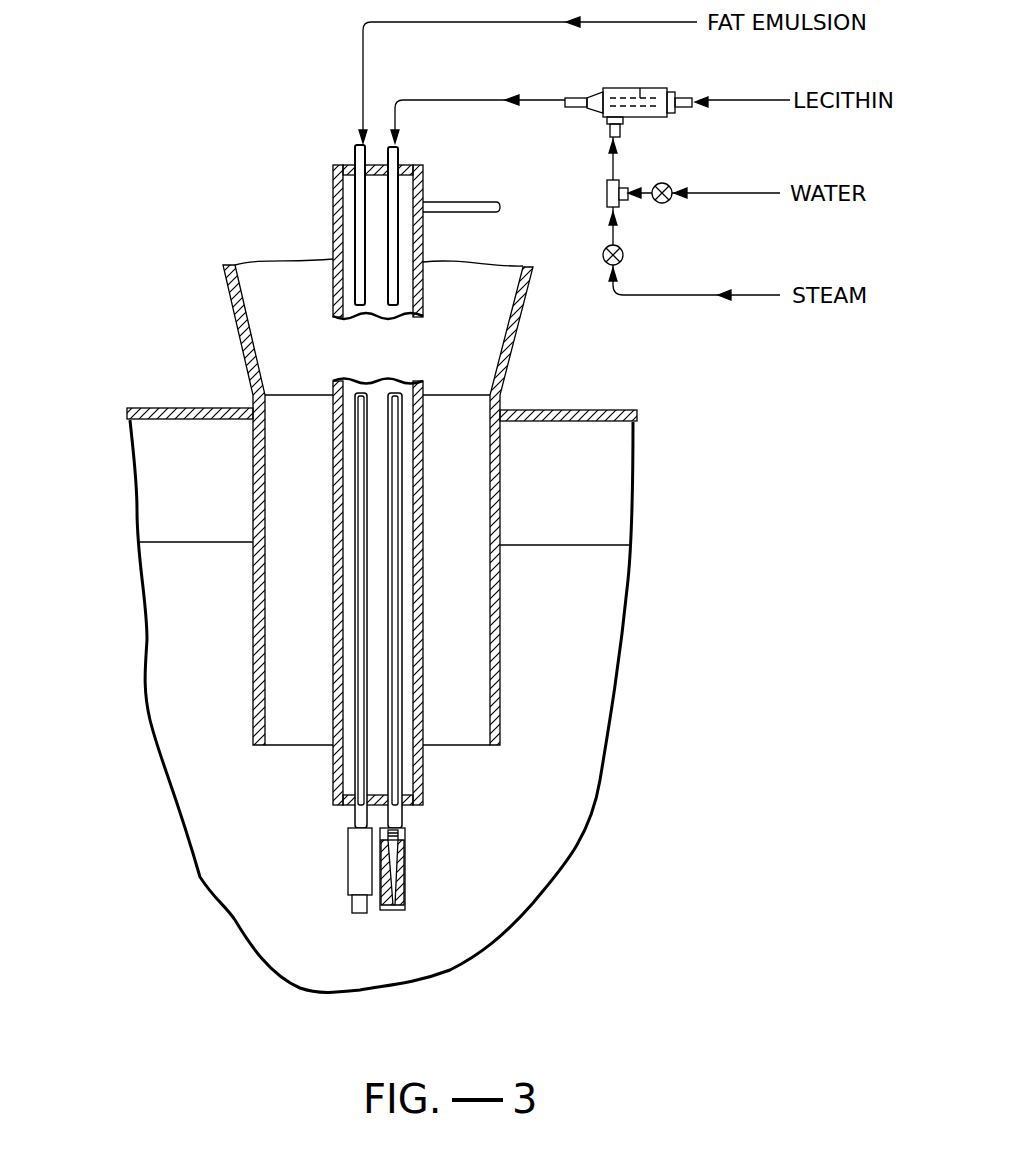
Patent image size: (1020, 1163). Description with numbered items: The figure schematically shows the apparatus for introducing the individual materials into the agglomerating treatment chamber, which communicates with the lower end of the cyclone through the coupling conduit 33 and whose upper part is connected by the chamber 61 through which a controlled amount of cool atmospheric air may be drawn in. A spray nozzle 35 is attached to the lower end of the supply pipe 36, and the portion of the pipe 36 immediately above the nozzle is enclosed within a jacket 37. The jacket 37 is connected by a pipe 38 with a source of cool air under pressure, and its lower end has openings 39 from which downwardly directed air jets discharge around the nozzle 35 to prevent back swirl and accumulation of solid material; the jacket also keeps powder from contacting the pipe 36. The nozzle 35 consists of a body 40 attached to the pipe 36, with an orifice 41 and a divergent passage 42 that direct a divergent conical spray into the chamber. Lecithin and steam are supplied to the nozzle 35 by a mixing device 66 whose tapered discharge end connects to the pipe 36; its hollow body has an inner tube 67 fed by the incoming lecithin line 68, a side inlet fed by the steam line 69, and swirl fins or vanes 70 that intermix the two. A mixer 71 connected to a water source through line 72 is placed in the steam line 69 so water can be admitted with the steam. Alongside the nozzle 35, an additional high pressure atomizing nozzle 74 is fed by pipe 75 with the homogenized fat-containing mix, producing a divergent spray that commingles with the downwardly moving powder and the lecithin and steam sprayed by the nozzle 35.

The coupling conduit 33 is at (255, 652).
The spray nozzle 35 is at (438, 874).
The supply pipe 36 is at (463, 98).
The jacket 37 is at (428, 381).
The pipe 38 is at (472, 203).
The openings 39 is at (410, 812).
The body 40 is at (402, 835).
The orifice 41 is at (397, 845).
The divergent passage 42 is at (393, 910).
The chamber 61 is at (540, 409).
The mixing device 66 is at (634, 88).
The inner tube 67 is at (640, 80).
The incoming line 68 is at (762, 100).
The incoming line 69 is at (613, 160).
The swirl fins or vanes 70 is at (598, 87).
The mixer 71 is at (607, 193).
The line 72 is at (727, 195).
The additional nozzle 74 is at (348, 877).
The pipe 75 is at (363, 45).